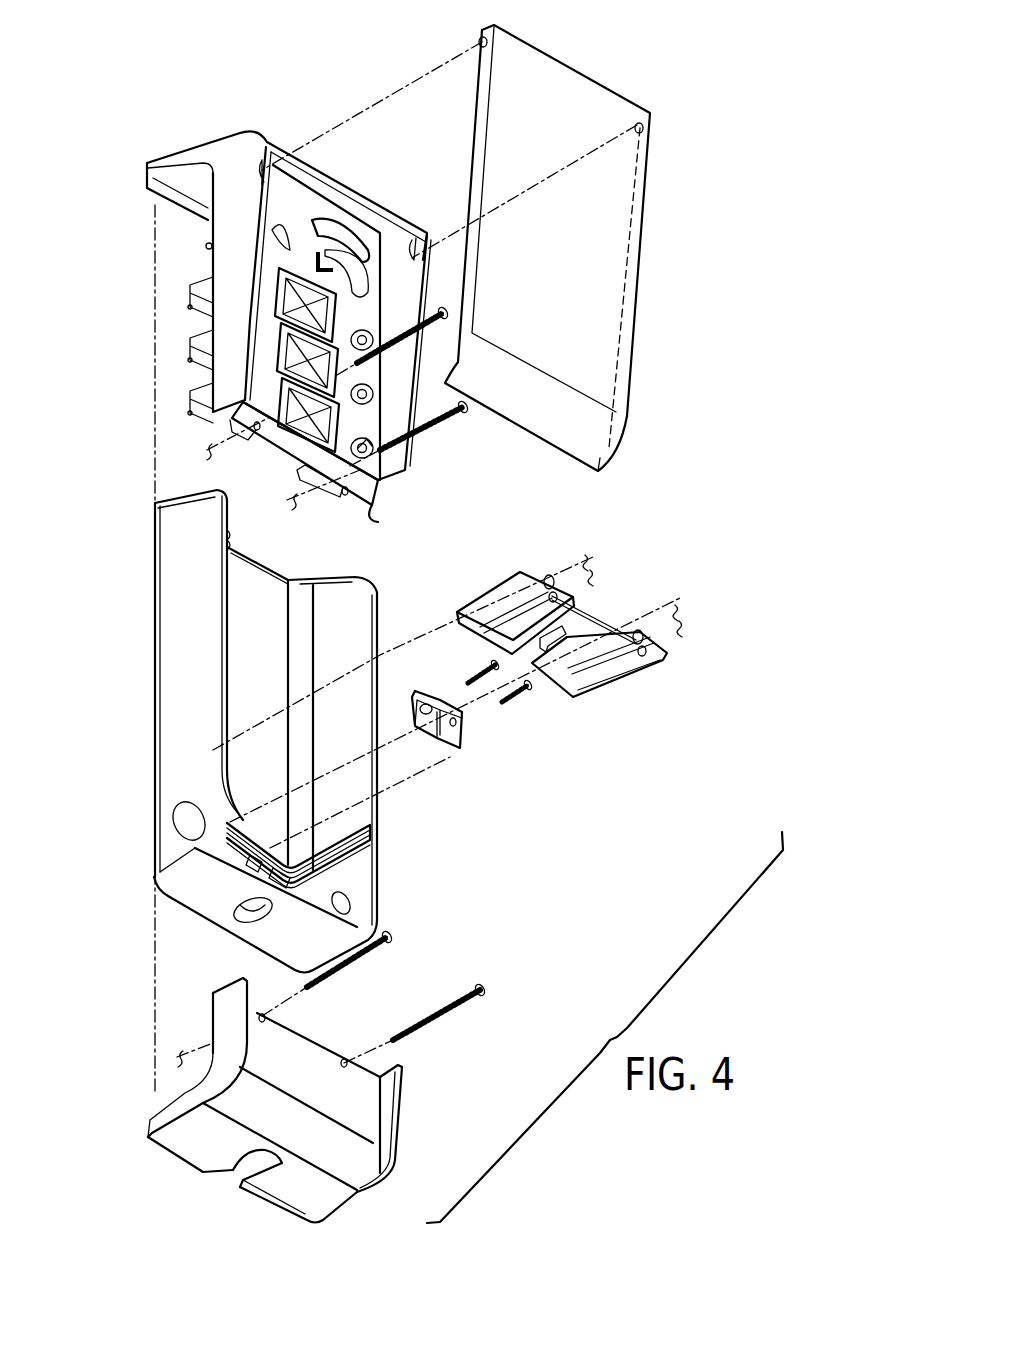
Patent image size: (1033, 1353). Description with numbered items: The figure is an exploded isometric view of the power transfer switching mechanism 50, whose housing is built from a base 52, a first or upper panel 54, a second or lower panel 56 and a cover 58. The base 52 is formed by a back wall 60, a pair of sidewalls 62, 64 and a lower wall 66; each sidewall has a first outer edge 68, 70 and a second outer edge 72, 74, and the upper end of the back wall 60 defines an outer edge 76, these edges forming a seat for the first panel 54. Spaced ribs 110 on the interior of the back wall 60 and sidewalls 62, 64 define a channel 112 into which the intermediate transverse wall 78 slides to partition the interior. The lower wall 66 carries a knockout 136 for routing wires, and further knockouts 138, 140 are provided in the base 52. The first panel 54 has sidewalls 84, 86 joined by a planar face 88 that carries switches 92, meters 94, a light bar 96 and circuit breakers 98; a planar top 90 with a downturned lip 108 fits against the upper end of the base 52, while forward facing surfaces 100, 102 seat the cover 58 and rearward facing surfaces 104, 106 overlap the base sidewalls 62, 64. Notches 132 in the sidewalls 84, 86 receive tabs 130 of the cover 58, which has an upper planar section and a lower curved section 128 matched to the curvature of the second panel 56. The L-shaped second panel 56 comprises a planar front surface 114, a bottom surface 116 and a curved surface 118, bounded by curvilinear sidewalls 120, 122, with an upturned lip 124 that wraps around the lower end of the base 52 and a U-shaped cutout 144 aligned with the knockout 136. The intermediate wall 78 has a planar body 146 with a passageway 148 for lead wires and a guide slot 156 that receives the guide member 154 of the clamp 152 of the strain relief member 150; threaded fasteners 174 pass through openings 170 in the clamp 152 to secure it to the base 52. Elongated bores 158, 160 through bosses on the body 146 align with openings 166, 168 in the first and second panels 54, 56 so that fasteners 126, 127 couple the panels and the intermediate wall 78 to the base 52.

The power transfer switching mechanism 50 is at (740, 292).
The base 52 is at (138, 658).
The first panel 54 is at (241, 131).
The second panel 56 is at (365, 1200).
The cover 58 is at (597, 257).
The back wall 60 is at (243, 648).
The sidewall 62 is at (176, 567).
The sidewall 64 is at (372, 583).
The lower wall 66 is at (300, 927).
The first outer edge 68 is at (233, 662).
The first outer edge 70 is at (378, 623).
The second outer edge 72 is at (170, 495).
The second outer edge 74 is at (362, 580).
The outer edge 76 is at (263, 553).
The intermediate transverse wall 78 is at (635, 671).
The sidewall 84 is at (230, 327).
The sidewall 86 is at (388, 492).
The planar face 88 is at (248, 412).
The top 90 is at (244, 134).
The switches 92 is at (290, 438).
The meters 94 is at (308, 263).
The light bar 96 is at (312, 222).
The circuit breakers 98 is at (370, 441).
The forward facing surface 100 is at (245, 365).
The forward facing surface 102 is at (420, 380).
The rearward facing surface 104 is at (210, 228).
The rearward facing surface 106 is at (358, 508).
The lip 108 is at (178, 190).
The ribs 110 is at (375, 822).
The channel 112 is at (378, 830).
The planar front surface 114 is at (355, 1105).
The bottom surface 116 is at (280, 1203).
The curved surface 118 is at (360, 1168).
The curvilinear sidewall 120 is at (225, 1020).
The curvilinear sidewall 122 is at (405, 1080).
The upturned lip 124 is at (168, 1108).
The fasteners 126 is at (605, 318).
The fasteners 127 is at (432, 308).
The lower curved section 128 is at (596, 450).
The tabs 130 is at (484, 36).
The notches 132 is at (262, 190).
The knockout 136 is at (255, 920).
The knockout 138 is at (183, 822).
The knockout 140 is at (360, 915).
The U-shaped cutout 144 is at (245, 1165).
The planar body 146 is at (512, 578).
The passageway 148 is at (548, 668).
The strain relief member 150 is at (428, 757).
The clamp 152 is at (460, 750).
The guide member 154 is at (441, 695).
The guide slot 156 is at (592, 612).
The elongated bores 158 is at (565, 600).
The elongated bores 160 is at (551, 578).
The openings 166 is at (340, 1066).
The openings 168 is at (258, 442).
The openings 170 is at (422, 705).
The threaded fasteners 174 is at (478, 690).